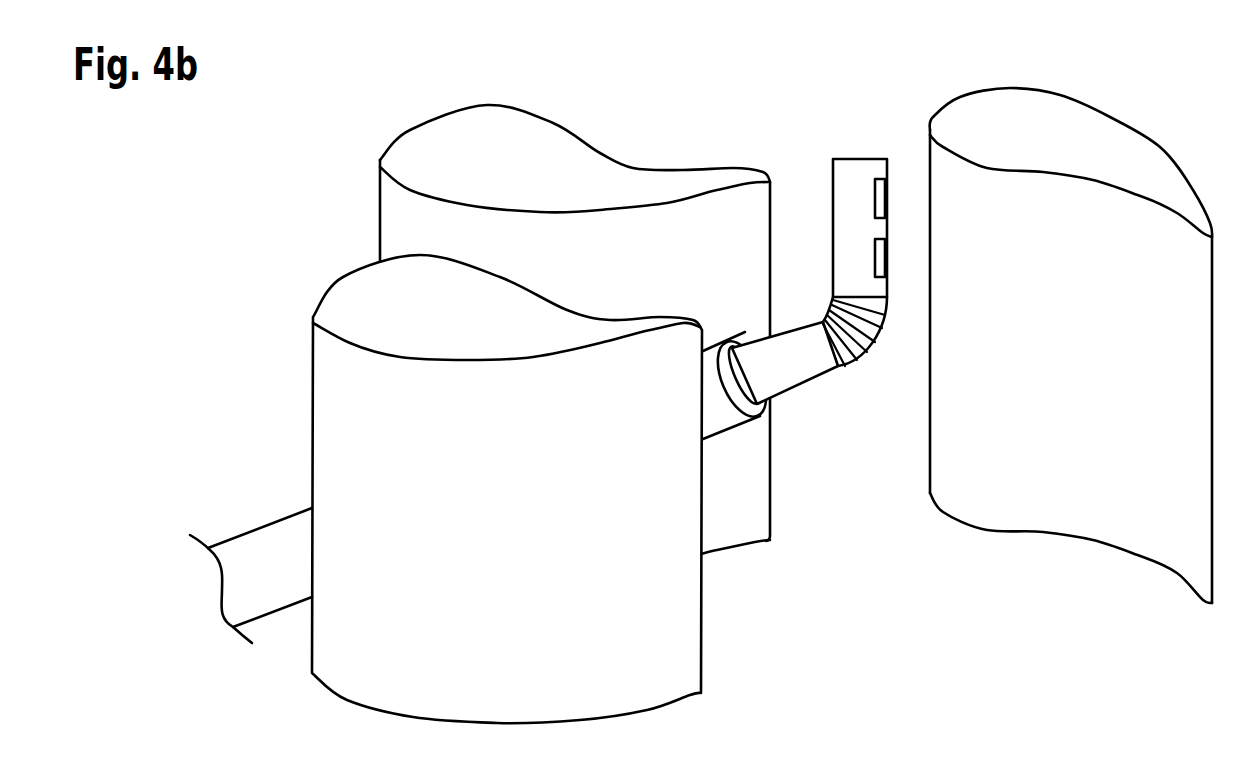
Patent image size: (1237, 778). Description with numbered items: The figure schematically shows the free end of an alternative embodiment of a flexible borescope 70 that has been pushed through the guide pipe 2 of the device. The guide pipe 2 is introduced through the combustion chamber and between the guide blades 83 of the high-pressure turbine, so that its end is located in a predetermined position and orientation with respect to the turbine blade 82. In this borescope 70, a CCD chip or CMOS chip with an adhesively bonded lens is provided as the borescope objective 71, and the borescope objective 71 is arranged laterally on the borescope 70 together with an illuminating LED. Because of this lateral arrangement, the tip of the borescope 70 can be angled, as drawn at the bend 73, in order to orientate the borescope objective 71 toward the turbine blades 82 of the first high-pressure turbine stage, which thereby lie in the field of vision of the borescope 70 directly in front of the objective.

The guide pipe 2 is at (717, 413).
The flexible borescope 70 is at (793, 363).
The borescope objective 71 is at (875, 198).
The elbow / bend 73 is at (876, 262).
The turbine blade 82 is at (1053, 142).
The guide blades 83 is at (541, 414).